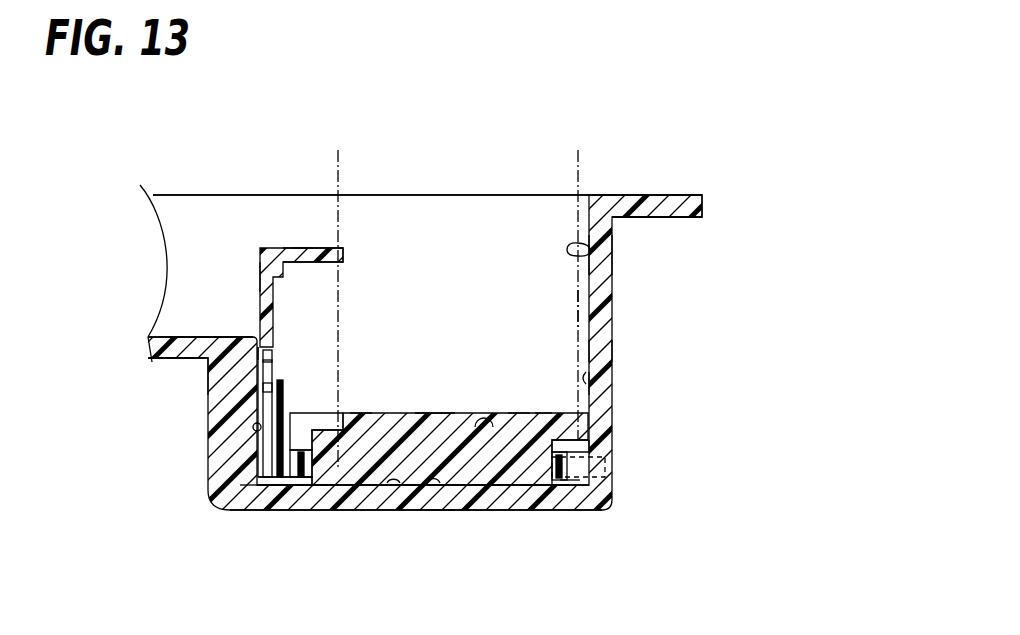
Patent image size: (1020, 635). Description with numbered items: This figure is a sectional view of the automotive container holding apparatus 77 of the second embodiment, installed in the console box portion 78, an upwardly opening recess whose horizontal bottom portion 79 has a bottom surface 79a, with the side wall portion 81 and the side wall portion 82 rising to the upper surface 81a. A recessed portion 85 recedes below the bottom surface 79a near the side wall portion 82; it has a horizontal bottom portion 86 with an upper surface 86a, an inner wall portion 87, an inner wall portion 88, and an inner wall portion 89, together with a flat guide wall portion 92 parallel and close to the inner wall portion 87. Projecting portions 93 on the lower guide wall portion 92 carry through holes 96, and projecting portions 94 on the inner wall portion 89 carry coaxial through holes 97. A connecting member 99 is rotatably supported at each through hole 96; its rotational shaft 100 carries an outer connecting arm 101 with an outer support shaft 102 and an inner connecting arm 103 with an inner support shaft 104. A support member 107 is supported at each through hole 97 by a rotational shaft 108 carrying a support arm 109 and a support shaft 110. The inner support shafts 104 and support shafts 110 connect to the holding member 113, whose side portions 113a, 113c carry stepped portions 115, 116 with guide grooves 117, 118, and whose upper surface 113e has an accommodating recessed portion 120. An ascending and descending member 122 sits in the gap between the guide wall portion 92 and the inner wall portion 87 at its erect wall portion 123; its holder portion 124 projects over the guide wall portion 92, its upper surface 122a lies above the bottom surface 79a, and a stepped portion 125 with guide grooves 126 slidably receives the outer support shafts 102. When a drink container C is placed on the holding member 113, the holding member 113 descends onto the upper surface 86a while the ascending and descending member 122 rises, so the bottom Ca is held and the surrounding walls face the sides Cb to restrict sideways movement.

The automotive container holding apparatus 77 is at (552, 112).
The console box portion 78 is at (706, 194).
The bottom portion 79 is at (153, 333).
The bottom surface 79a is at (200, 333).
The side wall portion 81 is at (265, 208).
The upper surface 81a is at (655, 210).
The side wall portion 82 is at (600, 255).
The recessed portion 85 is at (440, 492).
The bottom portion 86 is at (458, 502).
The upper surface 86a is at (392, 483).
The inner wall portion 87 is at (270, 425).
The inner wall portion 88 is at (548, 347).
The inner wall portion 89 is at (598, 380).
The guide wall portion 92 is at (275, 402).
The projecting portion 93 is at (300, 488).
The projecting portion 94 is at (555, 480).
The through hole 96 is at (252, 490).
The through hole 97 is at (607, 473).
The connecting member 99 is at (244, 387).
The rotational shaft 100 is at (257, 467).
The outer connecting arm 101 is at (253, 427).
The outer support shaft 102 is at (258, 350).
The inner connecting arm 103 is at (307, 486).
The inner support shaft 104 is at (358, 445).
The support member 107 is at (507, 487).
The rotational shaft 108 is at (570, 480).
The support arm 109 is at (560, 488).
The support shaft 110 is at (517, 457).
The holding member 113 is at (456, 398).
The side portion 113a is at (263, 455).
The side portion 113c is at (575, 428).
The upper surface 113e is at (435, 413).
The stepped portion 115 is at (305, 425).
The stepped portion 116 is at (567, 452).
The guide groove 117 is at (320, 487).
The guide groove 118 is at (540, 457).
The accommodating recessed portion 120 is at (336, 410).
The ascending and descending member 122 is at (257, 246).
The upper surface 122a is at (320, 248).
The erect wall portion 123 is at (258, 275).
The holder portion 124 is at (303, 247).
The stepped portion 125 is at (270, 362).
The guide groove 126 is at (250, 383).
The drink container C is at (585, 172).
The bottom Ca is at (475, 427).
The side Cb is at (580, 310).